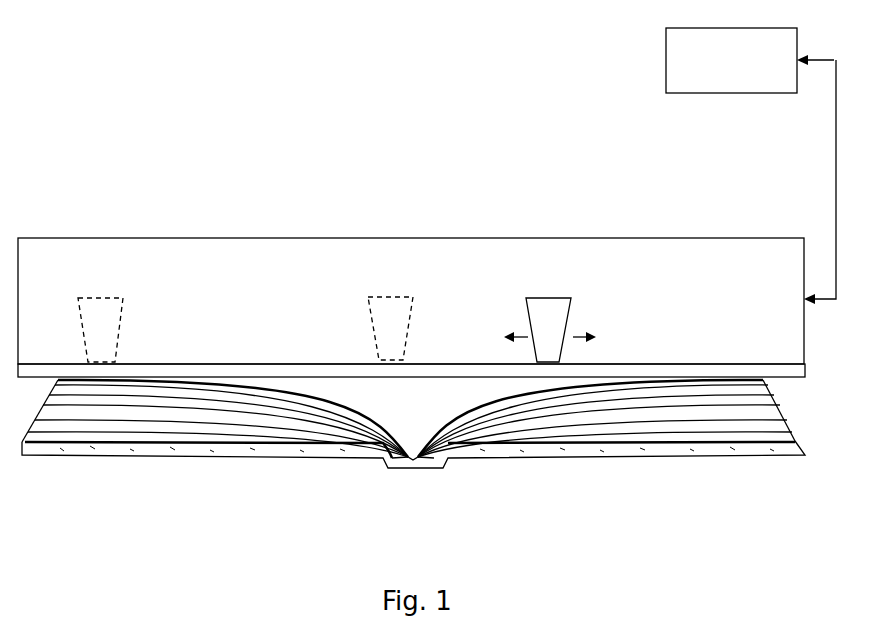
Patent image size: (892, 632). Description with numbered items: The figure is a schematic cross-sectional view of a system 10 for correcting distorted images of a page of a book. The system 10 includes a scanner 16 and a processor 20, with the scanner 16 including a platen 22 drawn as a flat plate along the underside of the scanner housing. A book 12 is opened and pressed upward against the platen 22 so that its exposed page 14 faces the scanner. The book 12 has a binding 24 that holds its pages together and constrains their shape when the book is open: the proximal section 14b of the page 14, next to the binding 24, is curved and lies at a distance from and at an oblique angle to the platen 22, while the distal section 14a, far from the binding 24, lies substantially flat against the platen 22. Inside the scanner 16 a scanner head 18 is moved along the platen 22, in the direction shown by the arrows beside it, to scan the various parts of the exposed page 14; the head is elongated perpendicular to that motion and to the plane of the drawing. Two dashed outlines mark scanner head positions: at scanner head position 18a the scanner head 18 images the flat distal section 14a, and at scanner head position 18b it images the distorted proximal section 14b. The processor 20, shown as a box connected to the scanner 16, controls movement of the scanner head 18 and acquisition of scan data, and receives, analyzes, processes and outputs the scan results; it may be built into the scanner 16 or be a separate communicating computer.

The system 10 is at (98, 69).
The book 12 is at (790, 420).
The exposed page 14 is at (258, 383).
The distal section 14a is at (103, 378).
The proximal section 14b is at (377, 422).
The scanner 16 is at (685, 237).
The scanner head 18 is at (560, 298).
The scanner head position 18a is at (105, 298).
The scanner head position 18b is at (402, 297).
The processor 20 is at (666, 60).
The platen 22 is at (653, 363).
The binding 24 is at (413, 459).